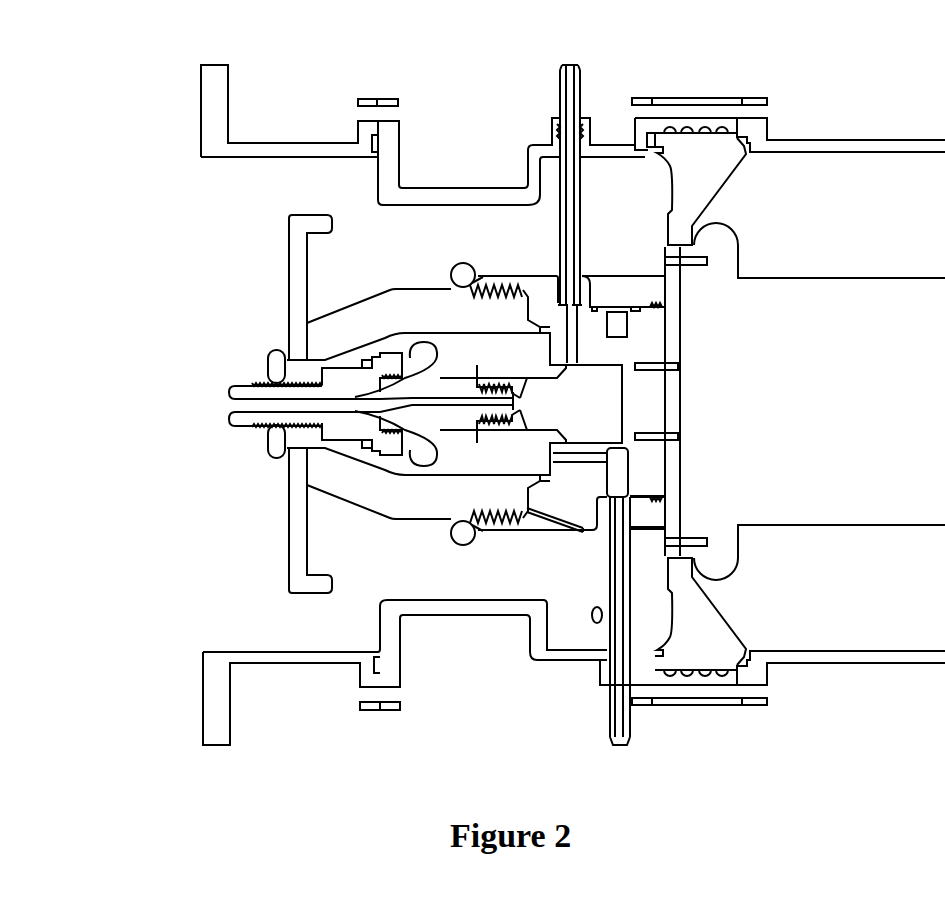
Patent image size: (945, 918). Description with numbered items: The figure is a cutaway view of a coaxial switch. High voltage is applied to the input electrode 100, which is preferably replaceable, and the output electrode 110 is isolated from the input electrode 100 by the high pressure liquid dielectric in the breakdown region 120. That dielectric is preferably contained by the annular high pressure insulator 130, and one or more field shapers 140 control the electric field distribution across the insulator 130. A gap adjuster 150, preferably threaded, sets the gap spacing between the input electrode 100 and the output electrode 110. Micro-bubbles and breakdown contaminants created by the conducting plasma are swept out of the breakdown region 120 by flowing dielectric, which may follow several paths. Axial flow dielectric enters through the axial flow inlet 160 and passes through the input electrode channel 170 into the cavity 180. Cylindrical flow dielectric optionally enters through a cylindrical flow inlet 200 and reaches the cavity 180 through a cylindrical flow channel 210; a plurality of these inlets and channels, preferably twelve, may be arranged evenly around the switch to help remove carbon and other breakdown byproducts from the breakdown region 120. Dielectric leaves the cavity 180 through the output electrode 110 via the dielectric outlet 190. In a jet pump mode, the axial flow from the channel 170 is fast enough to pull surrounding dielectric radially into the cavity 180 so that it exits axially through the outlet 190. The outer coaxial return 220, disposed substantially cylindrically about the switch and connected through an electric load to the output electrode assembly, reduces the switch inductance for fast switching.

The input electrode 100 is at (455, 357).
The output electrode 110 is at (410, 357).
The breakdown region 120 is at (418, 438).
The annular high pressure insulator 130 is at (370, 320).
The field shaper 140 is at (478, 262).
The gap adjuster 150 is at (253, 383).
The axial flow inlet 160 is at (560, 63).
The input electrode channel 170 is at (458, 407).
The cavity 180 is at (395, 405).
The dielectric outlet 190 is at (228, 407).
The cylindrical flow inlet 200 is at (617, 742).
The cylindrical flow channel 210 is at (553, 453).
The outer coaxial return 220 is at (466, 178).